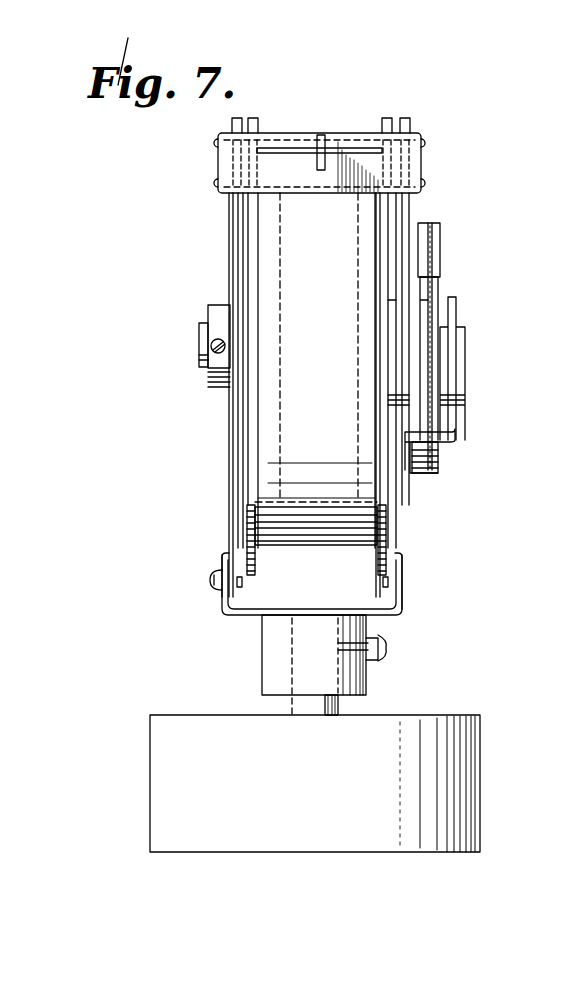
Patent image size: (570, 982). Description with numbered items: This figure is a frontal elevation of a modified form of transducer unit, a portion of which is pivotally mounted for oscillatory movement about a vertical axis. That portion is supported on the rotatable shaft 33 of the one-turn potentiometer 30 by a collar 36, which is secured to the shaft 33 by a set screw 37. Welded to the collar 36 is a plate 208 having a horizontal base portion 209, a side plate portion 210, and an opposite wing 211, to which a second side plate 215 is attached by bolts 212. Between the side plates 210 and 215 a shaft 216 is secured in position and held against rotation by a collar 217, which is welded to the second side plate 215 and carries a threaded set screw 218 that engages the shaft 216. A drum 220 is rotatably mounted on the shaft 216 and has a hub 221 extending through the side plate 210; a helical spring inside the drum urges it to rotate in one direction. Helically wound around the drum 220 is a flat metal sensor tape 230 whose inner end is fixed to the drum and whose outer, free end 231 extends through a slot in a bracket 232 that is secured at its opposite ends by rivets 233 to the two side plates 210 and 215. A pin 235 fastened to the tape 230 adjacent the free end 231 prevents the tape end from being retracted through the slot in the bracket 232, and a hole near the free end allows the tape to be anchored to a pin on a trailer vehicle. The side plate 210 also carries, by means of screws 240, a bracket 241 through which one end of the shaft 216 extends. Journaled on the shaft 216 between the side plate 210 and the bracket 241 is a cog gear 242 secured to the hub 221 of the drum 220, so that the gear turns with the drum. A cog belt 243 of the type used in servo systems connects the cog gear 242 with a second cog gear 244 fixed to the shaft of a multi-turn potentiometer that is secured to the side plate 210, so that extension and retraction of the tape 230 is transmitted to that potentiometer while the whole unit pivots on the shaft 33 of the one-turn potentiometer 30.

The one-turn potentiometer 30 is at (142, 821).
The rotatable shaft 33 is at (290, 712).
The collar 36 is at (266, 648).
The set screw 37 is at (387, 655).
The plate 208 is at (404, 608).
The horizontal base portion 209 is at (330, 606).
The side plate portion 210 is at (404, 560).
The wing 211 is at (222, 560).
The bolts 212 is at (212, 584).
The second side plate 215 is at (229, 450).
The shaft 216 is at (199, 347).
The collar 217 is at (216, 306).
The set screw 218 is at (214, 340).
The drum 220 is at (388, 525).
The hub 221 is at (428, 300).
The sensor tape 230 is at (318, 520).
The free end 231 is at (350, 150).
The bracket 232 is at (276, 140).
The rivets 233 is at (214, 183).
The pin 235 is at (321, 172).
The screws 240 is at (438, 458).
The bracket 241 is at (456, 413).
The cog gear 242 is at (434, 386).
The cog belt 243 is at (433, 240).
The second cog gear 244 is at (440, 226).